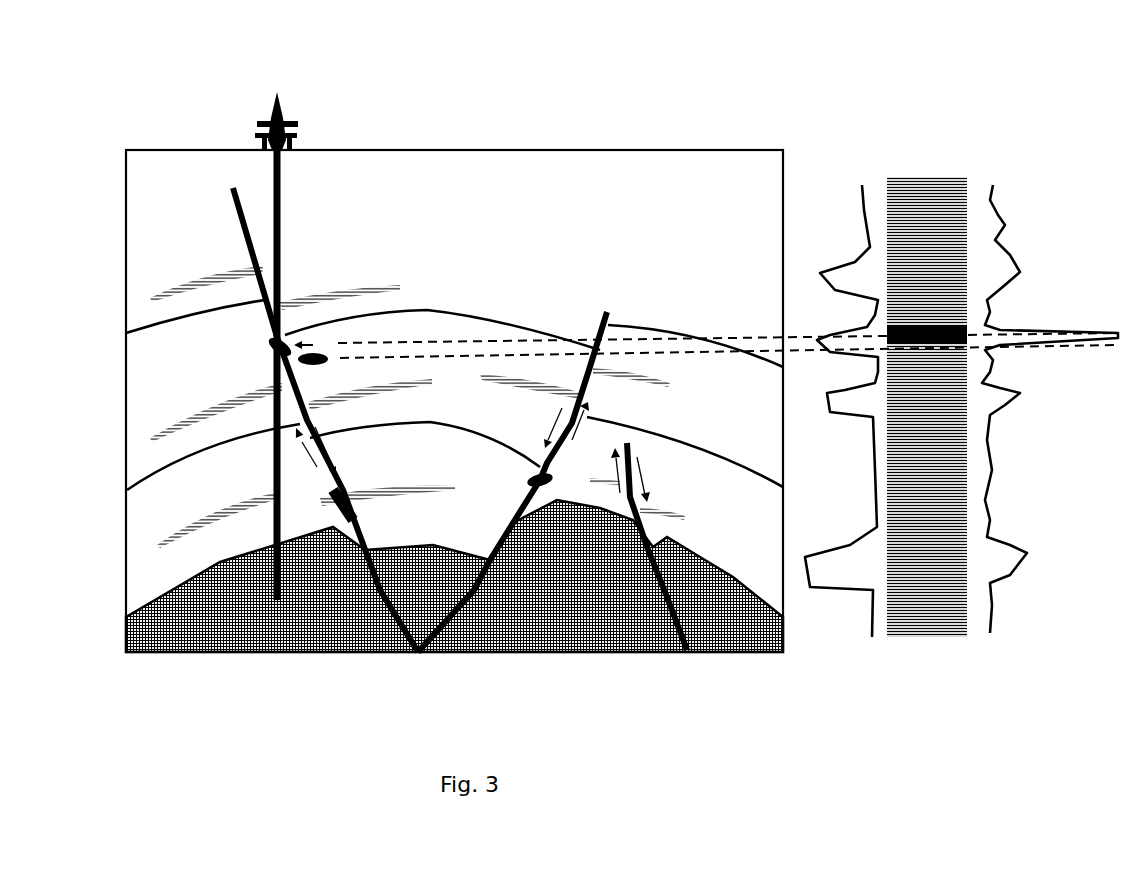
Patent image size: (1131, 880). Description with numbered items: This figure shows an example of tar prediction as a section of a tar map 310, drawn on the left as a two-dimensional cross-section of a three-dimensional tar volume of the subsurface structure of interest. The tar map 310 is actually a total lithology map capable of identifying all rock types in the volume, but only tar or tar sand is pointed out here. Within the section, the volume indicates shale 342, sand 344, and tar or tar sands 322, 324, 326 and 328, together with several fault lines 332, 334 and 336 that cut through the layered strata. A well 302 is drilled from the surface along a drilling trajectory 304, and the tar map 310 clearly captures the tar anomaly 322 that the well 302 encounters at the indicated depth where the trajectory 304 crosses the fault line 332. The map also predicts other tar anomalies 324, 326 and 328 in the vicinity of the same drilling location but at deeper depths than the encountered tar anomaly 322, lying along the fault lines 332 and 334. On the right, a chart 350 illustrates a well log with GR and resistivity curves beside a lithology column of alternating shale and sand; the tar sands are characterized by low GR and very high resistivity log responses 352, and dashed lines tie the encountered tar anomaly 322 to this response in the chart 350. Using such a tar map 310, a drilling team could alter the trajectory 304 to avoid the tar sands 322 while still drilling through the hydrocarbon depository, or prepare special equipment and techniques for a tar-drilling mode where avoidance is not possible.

The well 302 is at (302, 122).
The drilling trajectory 304 is at (280, 207).
The tar map 310 is at (473, 150).
The tar anomaly 322 is at (283, 335).
The tar anomaly 324 is at (320, 353).
The tar anomaly 326 is at (357, 517).
The tar anomaly 328 is at (527, 490).
The fault line 332 is at (237, 233).
The fault line 334 is at (607, 312).
The fault line 336 is at (630, 437).
The shale 342 is at (237, 393).
The sand 344 is at (302, 287).
The well log chart 350 is at (917, 113).
The resistivity log response 352 is at (845, 320).